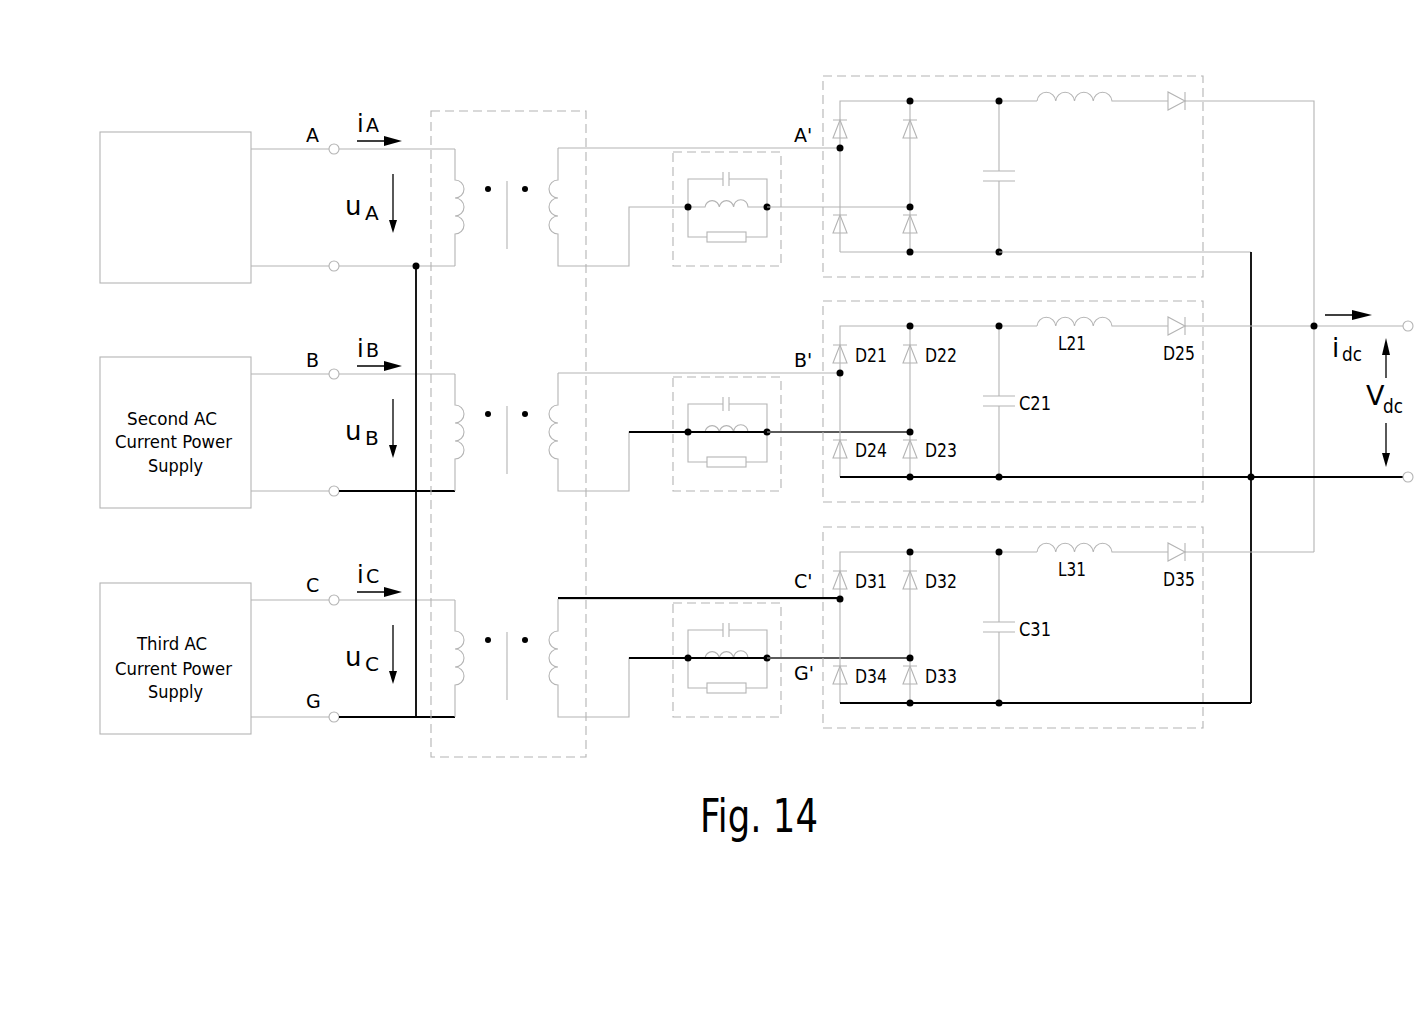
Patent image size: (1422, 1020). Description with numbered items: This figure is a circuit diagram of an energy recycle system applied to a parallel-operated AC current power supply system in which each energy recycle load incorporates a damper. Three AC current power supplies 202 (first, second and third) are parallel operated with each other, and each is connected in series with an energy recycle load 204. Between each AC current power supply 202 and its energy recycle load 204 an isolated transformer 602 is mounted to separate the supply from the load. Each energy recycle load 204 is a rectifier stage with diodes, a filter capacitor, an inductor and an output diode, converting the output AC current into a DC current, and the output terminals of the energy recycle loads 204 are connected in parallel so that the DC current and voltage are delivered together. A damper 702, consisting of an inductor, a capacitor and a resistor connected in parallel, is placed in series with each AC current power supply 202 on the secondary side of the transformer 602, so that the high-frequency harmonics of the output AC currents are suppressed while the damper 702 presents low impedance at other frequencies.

The AC current power supply 202 is at (185, 119).
The isolated transformer 602 is at (508, 110).
The energy recycle load 204 is at (1020, 55).
The damper 702 is at (730, 268).